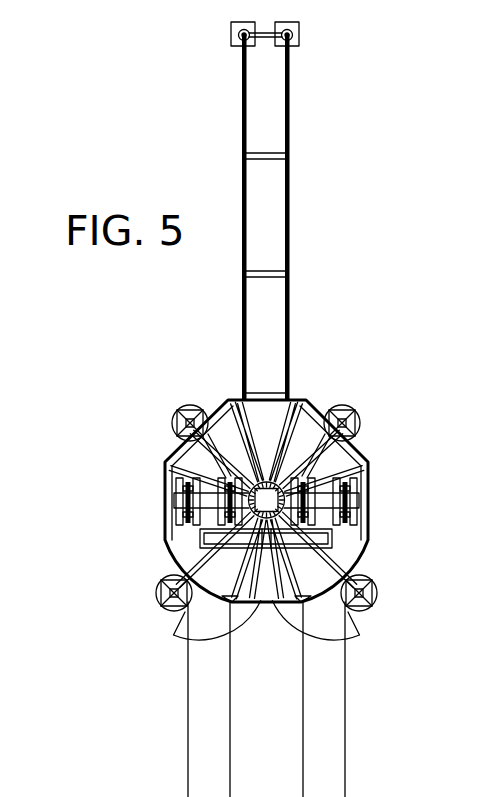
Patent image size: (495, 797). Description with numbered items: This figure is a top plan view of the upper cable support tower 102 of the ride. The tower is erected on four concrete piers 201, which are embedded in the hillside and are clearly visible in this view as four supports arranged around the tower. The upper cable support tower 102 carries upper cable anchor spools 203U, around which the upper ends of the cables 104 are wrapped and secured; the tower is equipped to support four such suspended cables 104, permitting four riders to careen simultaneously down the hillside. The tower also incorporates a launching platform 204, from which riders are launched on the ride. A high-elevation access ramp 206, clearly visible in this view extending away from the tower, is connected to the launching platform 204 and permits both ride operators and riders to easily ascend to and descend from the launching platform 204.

The upper cable support tower 102 is at (354, 356).
The cable 104 is at (228, 683).
The concrete piers 201 is at (172, 425).
The upper cable anchor spool 203U is at (226, 479).
The launching platform 204 is at (360, 522).
The high-elevation access ramp 206 is at (278, 228).